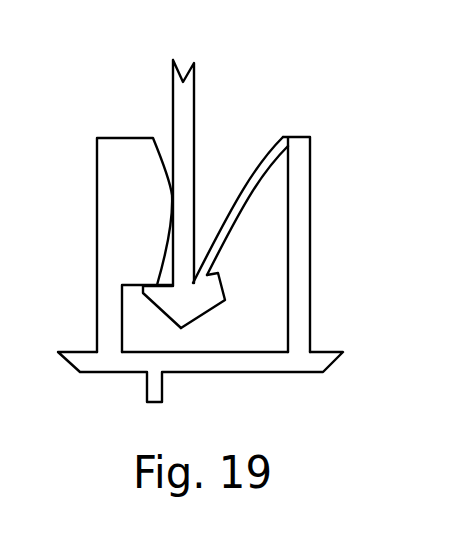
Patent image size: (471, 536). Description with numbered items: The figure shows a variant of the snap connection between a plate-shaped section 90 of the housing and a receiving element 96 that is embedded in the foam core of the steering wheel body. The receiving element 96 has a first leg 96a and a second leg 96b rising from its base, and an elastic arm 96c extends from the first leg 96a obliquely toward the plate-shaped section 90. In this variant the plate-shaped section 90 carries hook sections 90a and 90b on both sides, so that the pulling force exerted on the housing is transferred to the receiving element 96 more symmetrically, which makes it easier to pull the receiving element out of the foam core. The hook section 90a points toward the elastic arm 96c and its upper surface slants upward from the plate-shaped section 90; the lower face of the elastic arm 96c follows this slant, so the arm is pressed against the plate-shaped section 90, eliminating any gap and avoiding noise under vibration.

The plate-shaped section 90 is at (187, 97).
The hook section 90a is at (196, 308).
The hook section 90b is at (148, 296).
The receiving element 96 is at (297, 362).
The first leg 96a is at (302, 242).
The second leg 96b is at (109, 241).
The elastic arm 96c is at (249, 188).